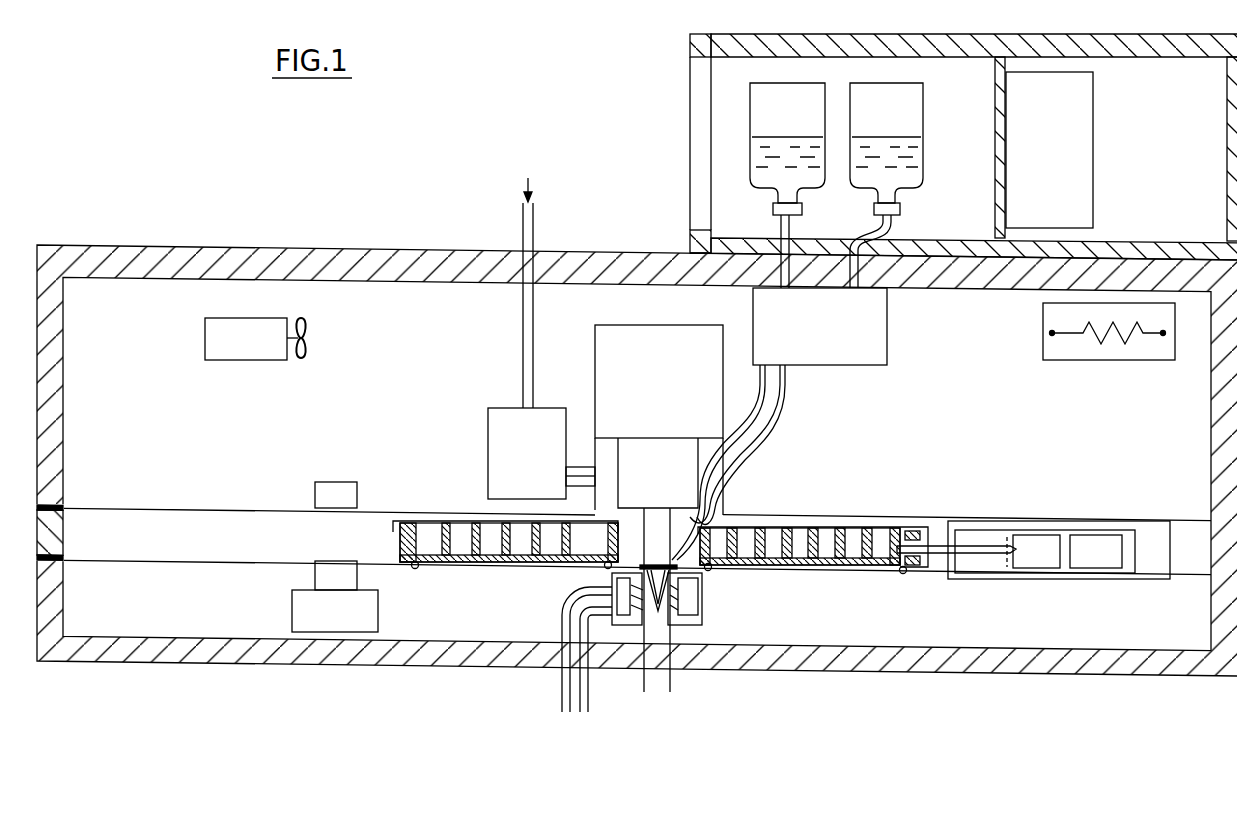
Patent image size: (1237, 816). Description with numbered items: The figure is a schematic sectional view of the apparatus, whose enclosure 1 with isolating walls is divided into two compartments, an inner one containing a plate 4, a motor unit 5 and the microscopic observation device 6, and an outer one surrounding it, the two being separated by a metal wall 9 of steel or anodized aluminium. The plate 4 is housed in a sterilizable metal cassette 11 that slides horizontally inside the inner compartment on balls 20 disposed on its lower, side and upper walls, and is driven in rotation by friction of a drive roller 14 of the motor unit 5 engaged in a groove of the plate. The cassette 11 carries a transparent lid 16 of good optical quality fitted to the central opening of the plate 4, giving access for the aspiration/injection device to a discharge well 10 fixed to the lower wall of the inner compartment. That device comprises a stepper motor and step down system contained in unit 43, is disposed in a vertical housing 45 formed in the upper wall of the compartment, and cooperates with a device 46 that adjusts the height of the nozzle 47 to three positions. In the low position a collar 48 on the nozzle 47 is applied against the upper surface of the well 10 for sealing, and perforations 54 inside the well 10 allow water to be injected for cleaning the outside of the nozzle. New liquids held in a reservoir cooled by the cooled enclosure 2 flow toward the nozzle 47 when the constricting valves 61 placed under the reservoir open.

The enclosure 1 is at (636, 444).
The cooled enclosure 2 is at (844, 34).
The plate 4 is at (770, 535).
The motor unit 5 is at (974, 532).
The microscopic observation device 6 is at (330, 615).
The metal wall 9 is at (275, 565).
The discharge well 10 is at (656, 632).
The sterilizable cassette 11 is at (415, 568).
The drive roller 14 is at (930, 578).
The transparent lid 16 is at (857, 527).
The balls 20 is at (420, 568).
The unit 43 is at (665, 484).
The vertical housing 45 is at (600, 447).
The height adjusting device 46 is at (652, 345).
The nozzle 47 is at (626, 582).
The collar 48 is at (655, 542).
The perforations 54 is at (702, 608).
The constricting valves 61 is at (887, 345).